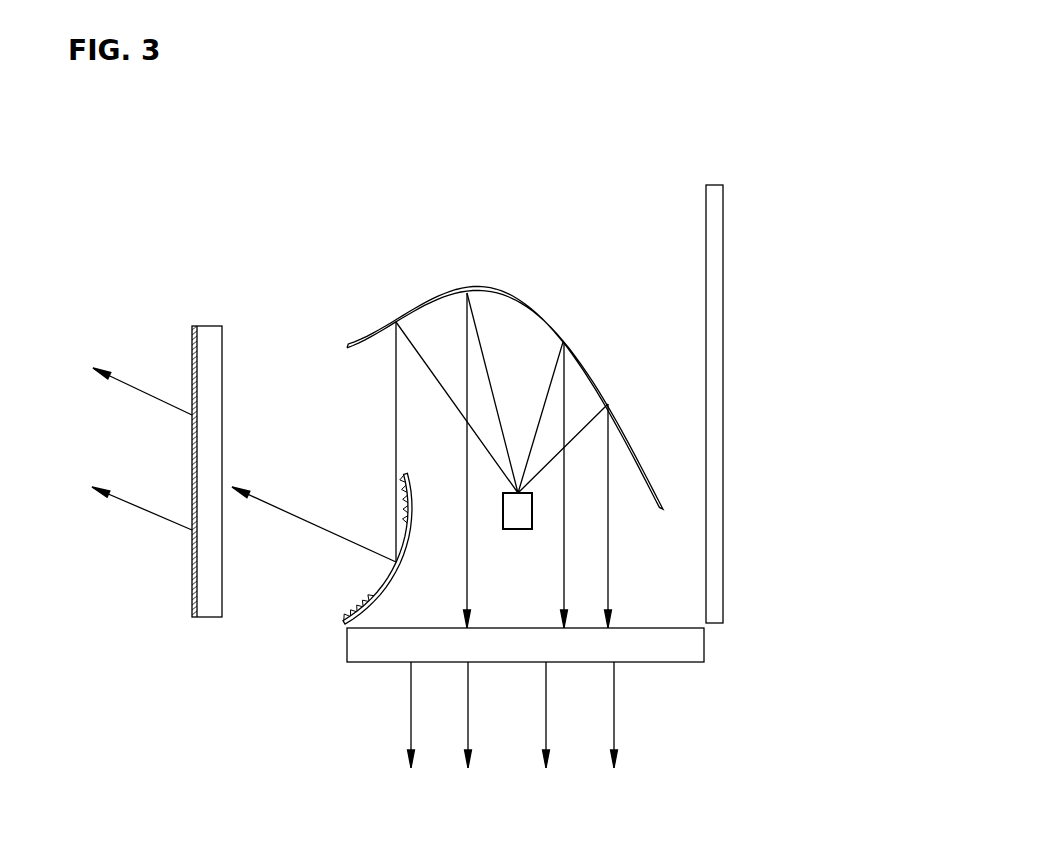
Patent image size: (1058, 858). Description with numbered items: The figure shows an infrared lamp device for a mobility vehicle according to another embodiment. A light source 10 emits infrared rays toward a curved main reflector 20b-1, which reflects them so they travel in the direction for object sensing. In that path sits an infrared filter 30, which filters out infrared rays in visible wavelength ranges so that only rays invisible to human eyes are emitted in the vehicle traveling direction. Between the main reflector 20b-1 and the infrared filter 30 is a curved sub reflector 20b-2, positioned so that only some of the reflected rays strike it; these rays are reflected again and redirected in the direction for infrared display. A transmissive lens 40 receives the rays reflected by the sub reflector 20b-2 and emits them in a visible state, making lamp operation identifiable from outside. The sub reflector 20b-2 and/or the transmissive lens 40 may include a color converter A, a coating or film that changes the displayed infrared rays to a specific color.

The light source 10 is at (523, 513).
The main reflector 20b-1 is at (490, 287).
The sub reflector 20b-2 is at (388, 590).
The infrared filter 30 is at (665, 653).
The transmissive lens 40 is at (211, 333).
The color converter A is at (192, 575).